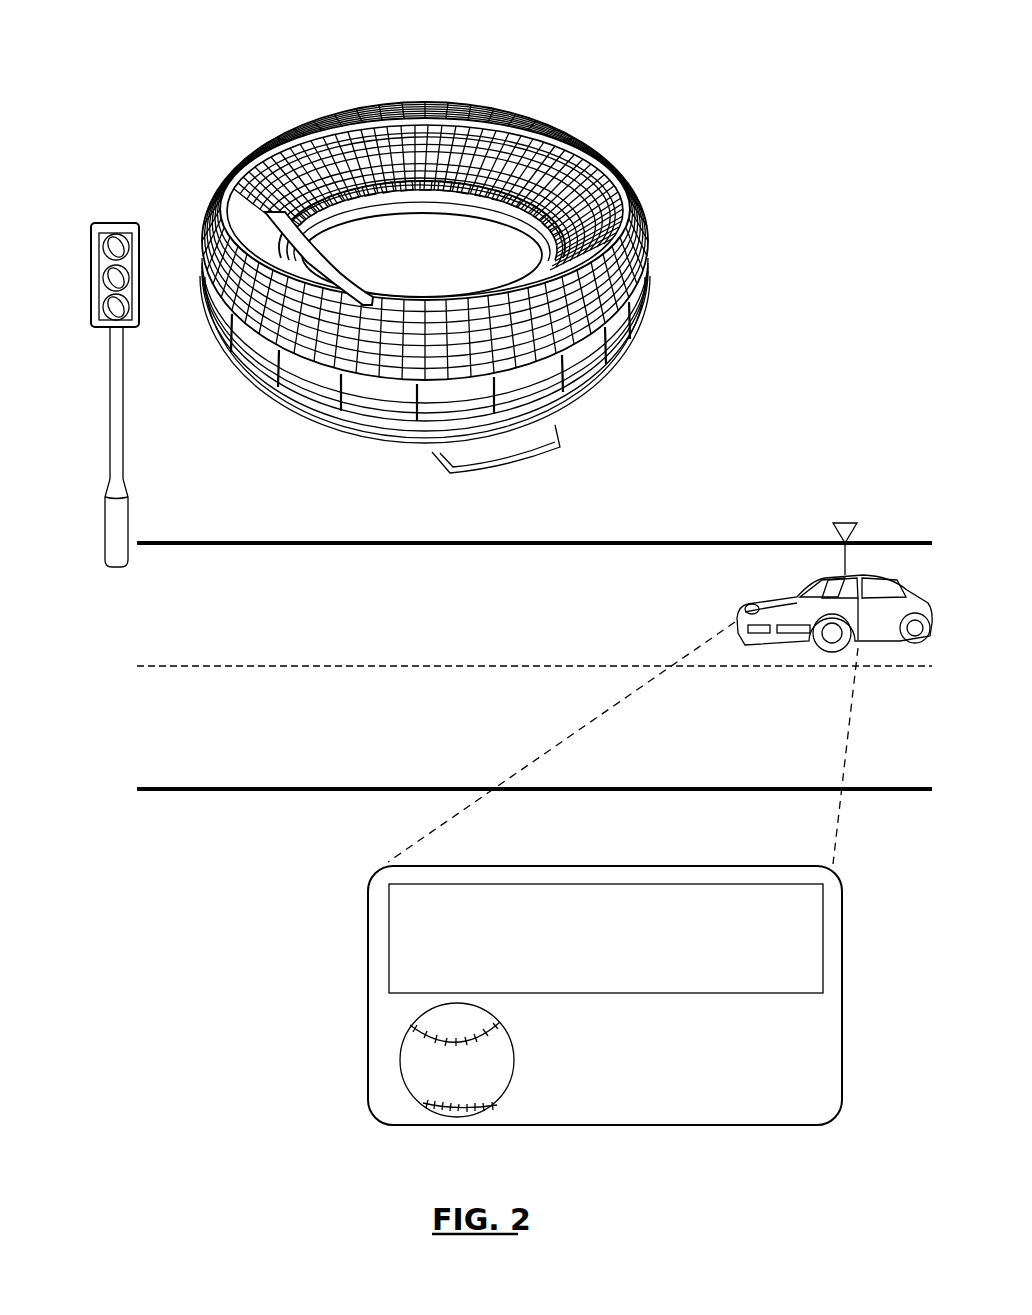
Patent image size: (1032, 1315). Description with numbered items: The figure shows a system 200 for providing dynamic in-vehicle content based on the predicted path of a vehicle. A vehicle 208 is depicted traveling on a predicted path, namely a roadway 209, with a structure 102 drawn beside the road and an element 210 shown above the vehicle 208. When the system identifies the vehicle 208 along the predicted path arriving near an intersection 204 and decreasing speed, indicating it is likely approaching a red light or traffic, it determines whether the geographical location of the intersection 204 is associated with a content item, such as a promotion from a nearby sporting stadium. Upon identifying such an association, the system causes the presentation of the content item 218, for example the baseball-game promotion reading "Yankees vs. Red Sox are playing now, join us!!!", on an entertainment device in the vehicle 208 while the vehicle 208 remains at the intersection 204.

The system 200 is at (116, 33).
The stadium / venue 102 is at (330, 114).
The intersection 204 is at (110, 416).
The vehicle 208 is at (824, 578).
The roadway 209 is at (628, 540).
The antenna / receiver 210 is at (843, 522).
The content item / device 218 is at (533, 866).